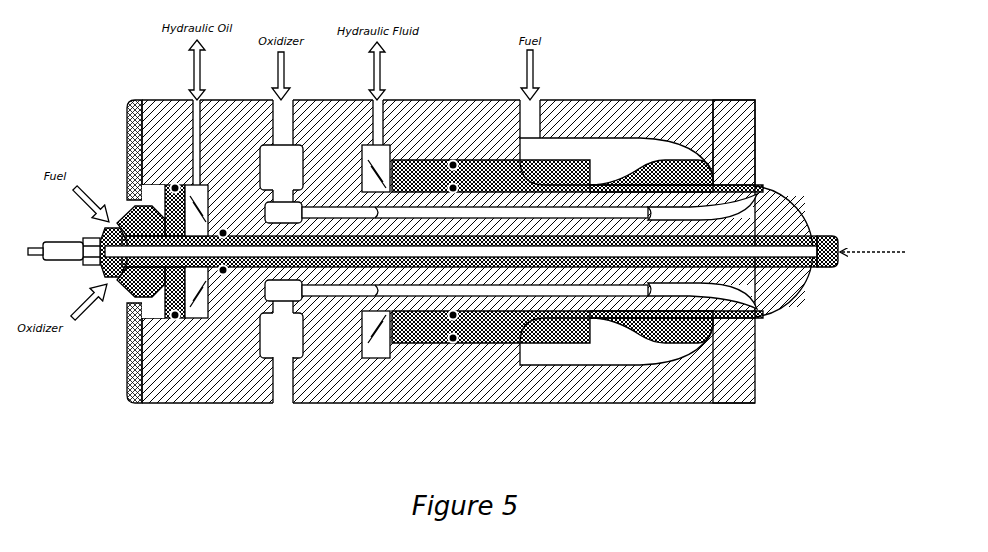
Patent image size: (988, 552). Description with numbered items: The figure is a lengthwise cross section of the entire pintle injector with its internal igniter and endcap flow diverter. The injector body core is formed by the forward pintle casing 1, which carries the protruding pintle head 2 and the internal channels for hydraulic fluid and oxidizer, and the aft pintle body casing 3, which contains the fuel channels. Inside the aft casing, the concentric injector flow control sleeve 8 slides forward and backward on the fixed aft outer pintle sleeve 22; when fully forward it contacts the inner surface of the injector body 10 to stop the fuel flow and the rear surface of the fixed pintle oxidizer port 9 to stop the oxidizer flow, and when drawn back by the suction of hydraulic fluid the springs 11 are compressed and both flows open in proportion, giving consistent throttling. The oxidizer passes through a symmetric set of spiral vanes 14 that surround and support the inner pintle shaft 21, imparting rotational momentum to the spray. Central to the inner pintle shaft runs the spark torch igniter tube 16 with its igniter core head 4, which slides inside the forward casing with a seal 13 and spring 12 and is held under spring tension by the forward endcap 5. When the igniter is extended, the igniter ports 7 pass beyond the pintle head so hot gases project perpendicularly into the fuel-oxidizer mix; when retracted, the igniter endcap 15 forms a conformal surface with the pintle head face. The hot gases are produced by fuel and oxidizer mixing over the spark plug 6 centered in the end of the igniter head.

The forward pintle casing 1 is at (207, 372).
The pintle head 2 is at (808, 288).
The aft pintle body casing 3 is at (755, 358).
The spark torch igniter core 4 is at (128, 295).
The forward endcap 5 is at (127, 355).
The spark plug 6 is at (62, 243).
The igniter ports 7 is at (827, 233).
The injector flow control sleeve 8 is at (615, 400).
The pintle oxidizer port 9 is at (767, 183).
The injector body inner surface 10 is at (712, 160).
The spring 11 is at (376, 342).
The spring 12 is at (202, 292).
The seal 13 is at (175, 188).
The spiral vanes 14 is at (557, 213).
The igniter endcap 15 is at (881, 252).
The igniter tube 16 is at (803, 217).
The inner pintle shaft 21 is at (602, 227).
The aft outer pintle sleeve 22 is at (520, 197).